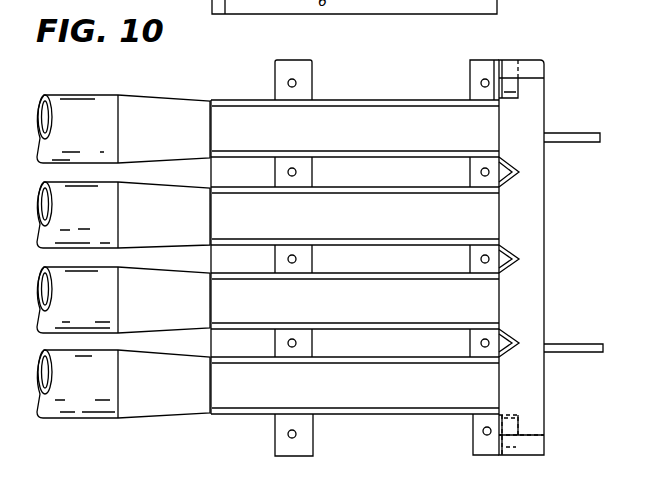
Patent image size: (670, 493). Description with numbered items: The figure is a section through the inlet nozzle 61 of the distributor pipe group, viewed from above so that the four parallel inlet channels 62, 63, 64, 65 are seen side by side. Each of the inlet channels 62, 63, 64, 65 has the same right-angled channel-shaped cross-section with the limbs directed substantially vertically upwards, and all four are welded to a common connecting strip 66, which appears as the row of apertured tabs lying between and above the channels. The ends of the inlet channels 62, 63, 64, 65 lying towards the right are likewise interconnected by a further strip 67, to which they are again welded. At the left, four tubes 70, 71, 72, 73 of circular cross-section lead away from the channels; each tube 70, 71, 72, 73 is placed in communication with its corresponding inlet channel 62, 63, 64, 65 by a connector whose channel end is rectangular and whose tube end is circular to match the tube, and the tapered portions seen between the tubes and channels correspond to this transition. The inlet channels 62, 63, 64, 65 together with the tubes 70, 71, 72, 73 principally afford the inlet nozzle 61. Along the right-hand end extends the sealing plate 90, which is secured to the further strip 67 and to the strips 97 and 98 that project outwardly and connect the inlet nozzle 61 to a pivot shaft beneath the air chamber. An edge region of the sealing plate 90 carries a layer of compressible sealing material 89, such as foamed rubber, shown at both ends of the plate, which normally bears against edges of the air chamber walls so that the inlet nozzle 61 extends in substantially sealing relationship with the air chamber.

The inlet nozzle 61 is at (339, 256).
The inlet channel 62 is at (366, 95).
The inlet channel 63 is at (385, 185).
The inlet channel 64 is at (390, 271).
The inlet channel 65 is at (393, 355).
The connecting strip 66 is at (273, 71).
The further strip 67 is at (470, 70).
The tube 70 is at (63, 106).
The tube 71 is at (90, 219).
The tube 72 is at (90, 304).
The tube 73 is at (90, 384).
The sealing material 89 is at (531, 60).
The sealing plate 90 is at (535, 222).
The strip 97 is at (591, 334).
The strip 98 is at (575, 135).